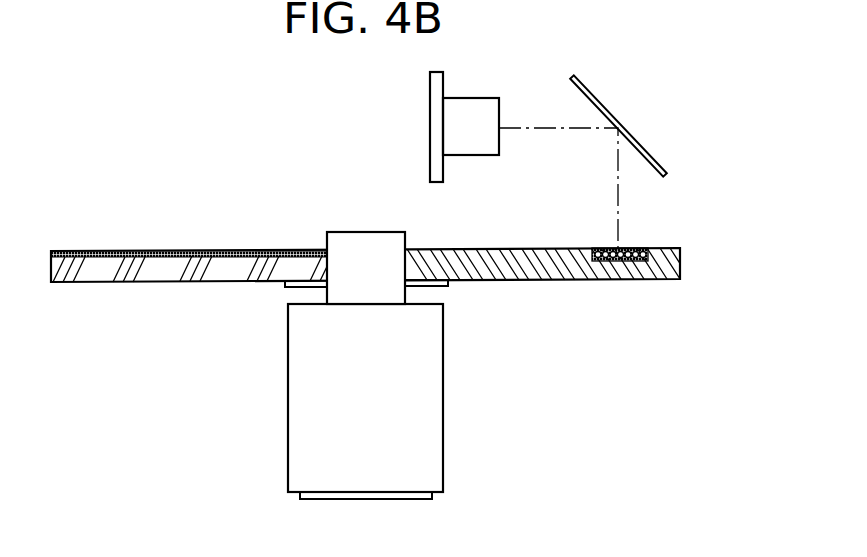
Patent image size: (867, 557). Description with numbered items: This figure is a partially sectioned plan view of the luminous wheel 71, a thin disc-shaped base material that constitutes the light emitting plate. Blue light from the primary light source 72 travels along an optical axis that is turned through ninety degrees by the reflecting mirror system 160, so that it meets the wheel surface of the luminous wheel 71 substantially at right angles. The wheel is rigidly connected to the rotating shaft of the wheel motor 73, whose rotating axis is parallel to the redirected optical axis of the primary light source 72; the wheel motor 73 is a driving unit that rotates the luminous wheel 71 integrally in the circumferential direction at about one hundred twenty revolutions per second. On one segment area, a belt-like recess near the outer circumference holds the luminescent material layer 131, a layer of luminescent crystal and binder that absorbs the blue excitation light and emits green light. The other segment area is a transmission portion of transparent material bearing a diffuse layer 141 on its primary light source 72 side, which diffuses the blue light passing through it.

The luminous wheel 71 is at (684, 289).
The primary light source 72 is at (473, 147).
The wheel motor 73 is at (308, 418).
The luminescent material layer 131 is at (607, 247).
The diffuse layer 141 is at (115, 251).
The reflecting mirror system 160 is at (667, 155).